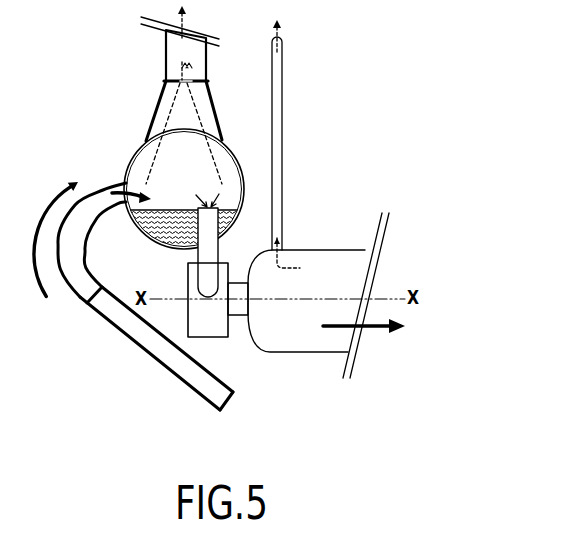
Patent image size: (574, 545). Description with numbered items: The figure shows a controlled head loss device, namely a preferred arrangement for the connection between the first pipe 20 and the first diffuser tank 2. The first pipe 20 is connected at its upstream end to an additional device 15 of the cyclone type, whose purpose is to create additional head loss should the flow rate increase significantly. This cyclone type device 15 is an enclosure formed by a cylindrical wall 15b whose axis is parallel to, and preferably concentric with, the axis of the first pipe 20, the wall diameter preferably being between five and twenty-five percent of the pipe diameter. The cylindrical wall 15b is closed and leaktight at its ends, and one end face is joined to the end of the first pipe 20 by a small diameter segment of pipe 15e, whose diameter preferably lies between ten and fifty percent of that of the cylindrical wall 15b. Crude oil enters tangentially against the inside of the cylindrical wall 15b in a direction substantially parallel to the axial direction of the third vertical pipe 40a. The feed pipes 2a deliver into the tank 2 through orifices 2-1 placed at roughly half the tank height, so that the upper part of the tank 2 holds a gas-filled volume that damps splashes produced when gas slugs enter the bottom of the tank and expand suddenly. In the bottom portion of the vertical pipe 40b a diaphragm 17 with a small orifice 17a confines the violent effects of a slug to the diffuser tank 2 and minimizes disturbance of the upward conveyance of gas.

The first diffuser tank 2 is at (145, 162).
The orifice 2-1 is at (128, 192).
The feed pipe 2a is at (76, 293).
The cyclone type device 15 is at (177, 323).
The cylindrical wall 15b is at (188, 283).
The small diameter segment of pipe 15e is at (237, 318).
The diaphragm 17 is at (175, 77).
The orifice 17a is at (182, 85).
The first pipe 20 is at (330, 352).
The third vertical pipe 40a is at (273, 132).
The vertical pipe 40b is at (198, 58).